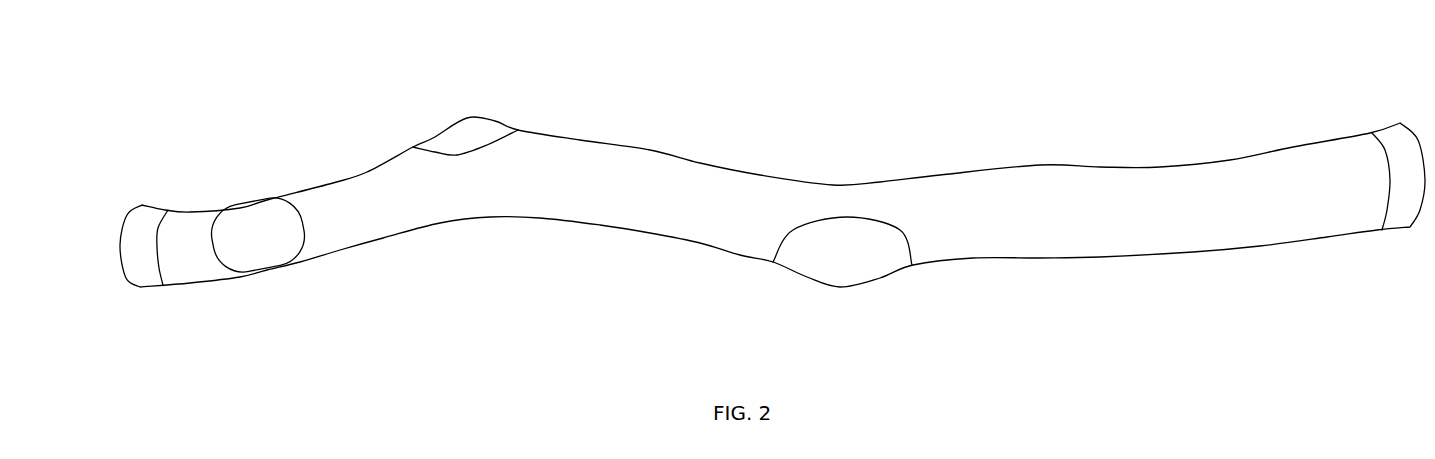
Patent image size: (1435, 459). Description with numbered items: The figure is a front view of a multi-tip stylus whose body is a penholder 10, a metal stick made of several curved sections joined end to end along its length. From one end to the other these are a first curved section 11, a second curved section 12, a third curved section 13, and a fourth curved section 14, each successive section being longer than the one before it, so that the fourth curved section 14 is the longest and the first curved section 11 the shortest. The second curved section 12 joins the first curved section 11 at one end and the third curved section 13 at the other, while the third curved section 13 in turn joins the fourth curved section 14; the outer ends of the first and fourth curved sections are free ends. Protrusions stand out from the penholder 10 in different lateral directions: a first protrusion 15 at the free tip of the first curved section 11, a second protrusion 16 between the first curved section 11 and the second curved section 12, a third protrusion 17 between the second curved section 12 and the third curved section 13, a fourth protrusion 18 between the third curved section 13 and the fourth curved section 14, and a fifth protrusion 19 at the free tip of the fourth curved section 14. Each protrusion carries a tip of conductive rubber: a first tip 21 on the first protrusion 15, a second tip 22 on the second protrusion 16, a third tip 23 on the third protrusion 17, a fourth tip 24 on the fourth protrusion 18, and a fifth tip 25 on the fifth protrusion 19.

The penholder 10 is at (653, 148).
The first curved section 11 is at (188, 270).
The second curved section 12 is at (372, 233).
The third curved section 13 is at (672, 228).
The fourth curved section 14 is at (1145, 238).
The first protrusion 15 is at (160, 200).
The second protrusion 16 is at (263, 280).
The third protrusion 17 is at (457, 115).
The fourth protrusion 18 is at (837, 288).
The fifth protrusion 19 is at (1385, 122).
The first tip 21 is at (152, 277).
The second tip 22 is at (263, 218).
The third tip 23 is at (488, 133).
The fourth tip 24 is at (897, 263).
The fifth tip 25 is at (1407, 217).